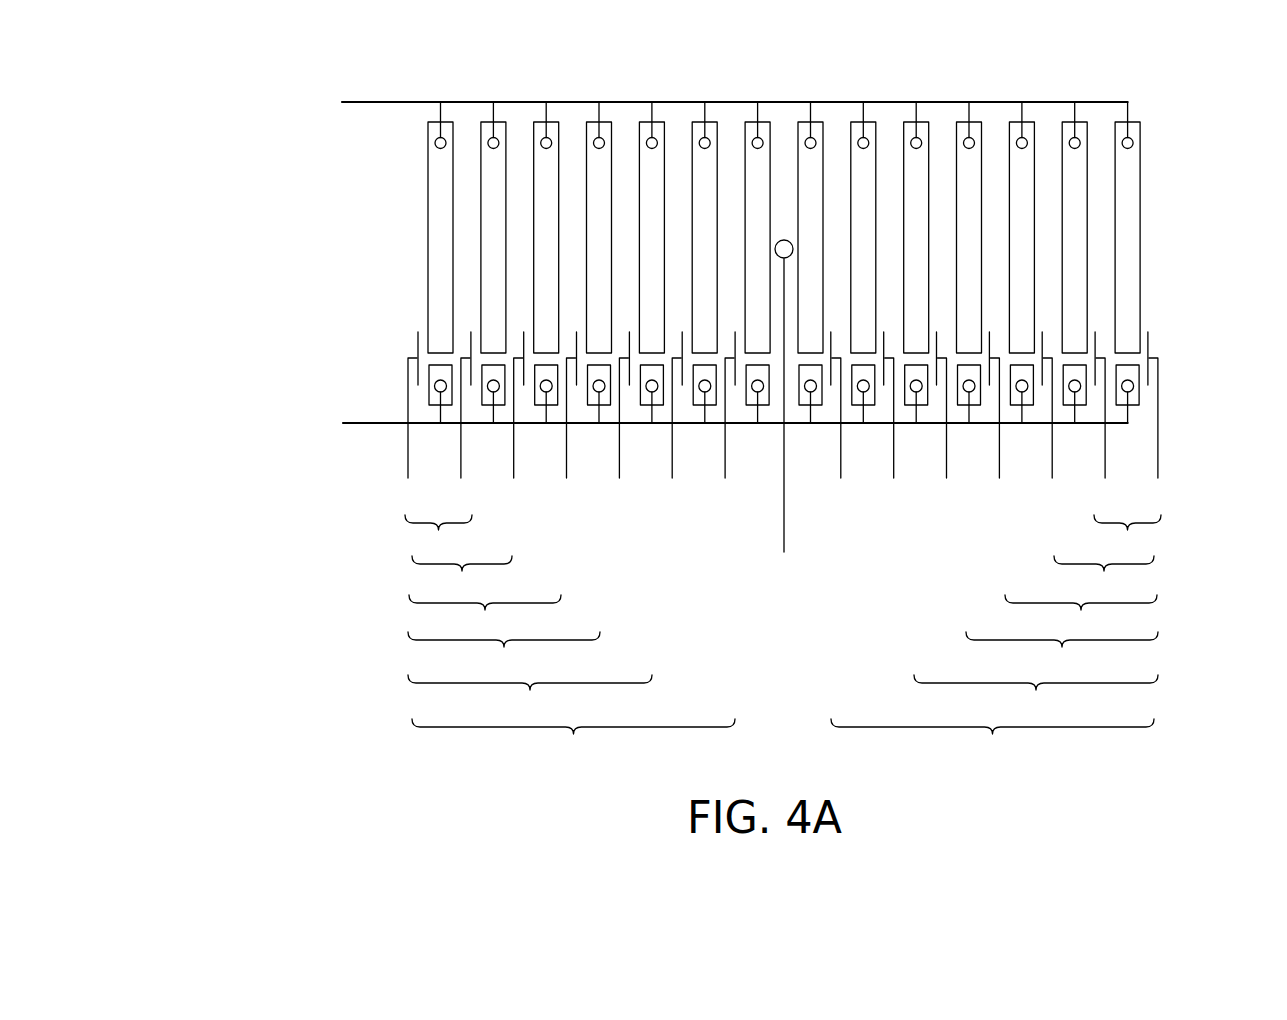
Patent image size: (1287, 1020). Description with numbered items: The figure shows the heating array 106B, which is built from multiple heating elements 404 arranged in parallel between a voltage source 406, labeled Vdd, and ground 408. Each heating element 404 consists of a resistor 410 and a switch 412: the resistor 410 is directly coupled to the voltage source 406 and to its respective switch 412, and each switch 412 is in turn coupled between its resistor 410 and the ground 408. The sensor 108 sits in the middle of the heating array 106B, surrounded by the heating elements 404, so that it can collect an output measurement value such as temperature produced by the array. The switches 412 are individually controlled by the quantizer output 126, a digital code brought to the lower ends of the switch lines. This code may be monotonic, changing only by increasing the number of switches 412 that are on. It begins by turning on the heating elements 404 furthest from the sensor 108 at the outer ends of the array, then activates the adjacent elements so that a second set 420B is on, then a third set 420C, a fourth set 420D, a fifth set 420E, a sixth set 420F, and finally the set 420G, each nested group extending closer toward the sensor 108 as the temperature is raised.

The heating array 106B is at (215, 125).
The heating element 404 is at (1141, 85).
The voltage source 406 is at (373, 102).
The ground 408 is at (374, 426).
The resistor 410 is at (428, 215).
The switch 412 is at (418, 346).
The quantizer output 126 is at (783, 435).
The sensor 108 is at (784, 414).
The second set of heating elements 420B is at (783, 537).
The third set of heating elements 420C is at (783, 579).
The fourth set of heating elements 420D is at (783, 617).
The fifth set of heating elements 420E is at (783, 655).
The sixth set of heating elements 420F is at (783, 698).
The sixth set of heating elements 420G is at (783, 745).